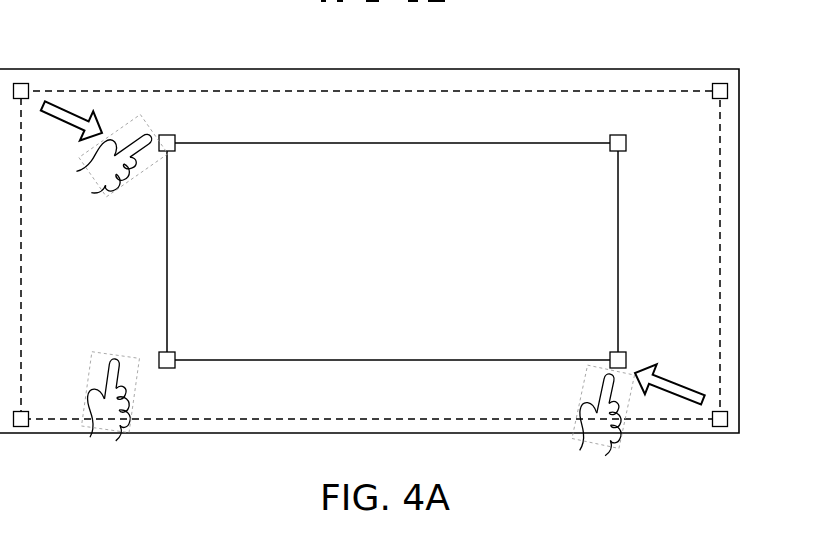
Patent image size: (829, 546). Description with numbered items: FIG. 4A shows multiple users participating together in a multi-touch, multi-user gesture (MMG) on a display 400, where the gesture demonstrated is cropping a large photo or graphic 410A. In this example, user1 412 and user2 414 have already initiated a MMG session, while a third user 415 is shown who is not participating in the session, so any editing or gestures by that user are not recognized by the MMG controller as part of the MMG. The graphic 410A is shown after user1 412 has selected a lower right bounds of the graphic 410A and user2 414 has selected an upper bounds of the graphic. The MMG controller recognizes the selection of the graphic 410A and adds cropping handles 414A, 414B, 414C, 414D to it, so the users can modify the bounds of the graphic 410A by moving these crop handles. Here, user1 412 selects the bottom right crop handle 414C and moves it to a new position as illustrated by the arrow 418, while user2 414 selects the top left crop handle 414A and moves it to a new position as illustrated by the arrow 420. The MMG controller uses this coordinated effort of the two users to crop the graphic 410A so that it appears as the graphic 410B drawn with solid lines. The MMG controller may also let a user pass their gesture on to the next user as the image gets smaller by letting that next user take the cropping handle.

The display 400 is at (629, 50).
The graphic 410A is at (552, 90).
The cropped graphic 410B is at (500, 144).
The top left crop handle 414A is at (29, 86).
The crop handle 414B is at (728, 87).
The bottom right crop handle 414C is at (728, 418).
The crop handle 414D is at (20, 427).
The user2 414 is at (119, 177).
The third user 415 is at (132, 430).
The user1 412 is at (629, 435).
The arrow 418 is at (677, 402).
The arrow 420 is at (70, 113).